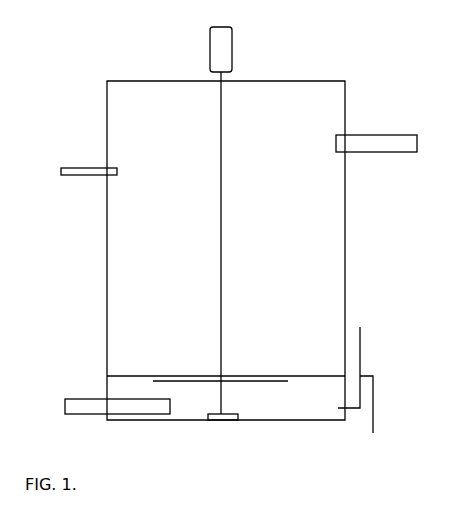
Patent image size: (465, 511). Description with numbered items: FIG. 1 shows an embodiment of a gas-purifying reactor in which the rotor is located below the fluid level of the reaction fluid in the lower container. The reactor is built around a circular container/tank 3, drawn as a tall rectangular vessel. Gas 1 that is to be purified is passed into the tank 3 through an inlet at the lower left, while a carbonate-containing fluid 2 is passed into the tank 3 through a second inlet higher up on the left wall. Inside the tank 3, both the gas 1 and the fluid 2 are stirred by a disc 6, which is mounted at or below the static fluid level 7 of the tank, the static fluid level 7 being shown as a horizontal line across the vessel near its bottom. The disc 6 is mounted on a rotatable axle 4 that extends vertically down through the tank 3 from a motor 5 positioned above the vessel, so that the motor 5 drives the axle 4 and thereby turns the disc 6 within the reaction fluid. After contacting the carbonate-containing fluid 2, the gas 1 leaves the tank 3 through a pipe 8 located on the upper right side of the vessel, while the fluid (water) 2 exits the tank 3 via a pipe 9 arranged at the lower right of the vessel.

The gas to be purified 1 is at (108, 407).
The carbonate-containing fluid 2 is at (70, 168).
The circular container/tank 3 is at (226, 250).
The rotatable axle 4 is at (229, 243).
The motor 5 is at (228, 49).
The disc 6 is at (220, 400).
The static fluid level 7 is at (226, 365).
The pipe 8 is at (387, 145).
The pipe 9 is at (363, 380).